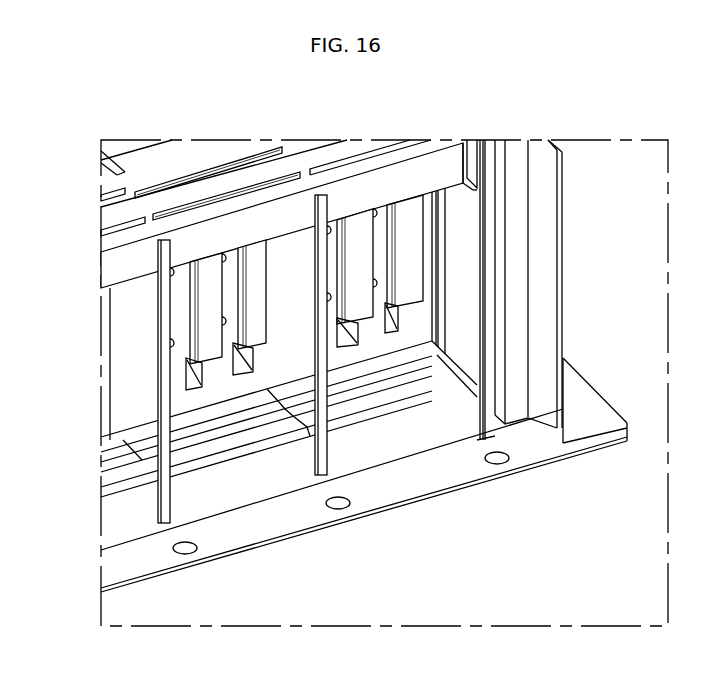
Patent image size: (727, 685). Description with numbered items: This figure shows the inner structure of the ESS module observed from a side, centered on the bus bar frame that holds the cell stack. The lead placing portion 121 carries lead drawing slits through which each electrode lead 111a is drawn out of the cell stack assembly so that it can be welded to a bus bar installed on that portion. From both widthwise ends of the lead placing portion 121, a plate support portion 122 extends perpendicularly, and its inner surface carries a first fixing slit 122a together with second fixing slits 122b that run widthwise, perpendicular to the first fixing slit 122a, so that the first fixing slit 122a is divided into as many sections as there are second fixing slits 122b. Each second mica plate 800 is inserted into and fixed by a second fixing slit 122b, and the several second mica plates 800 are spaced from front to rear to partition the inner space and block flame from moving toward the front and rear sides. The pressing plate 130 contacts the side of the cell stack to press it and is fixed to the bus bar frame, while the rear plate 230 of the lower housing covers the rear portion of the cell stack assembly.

The plate support portion 122 is at (422, 173).
The first fixing slit 122a is at (252, 418).
The second fixing slit 122b is at (328, 462).
The lead placing portion 121 is at (177, 397).
The electrode lead 111a is at (207, 317).
The second mica plate 800 is at (145, 442).
The pressing plate 130 is at (473, 223).
The rear plate 230 is at (545, 214).